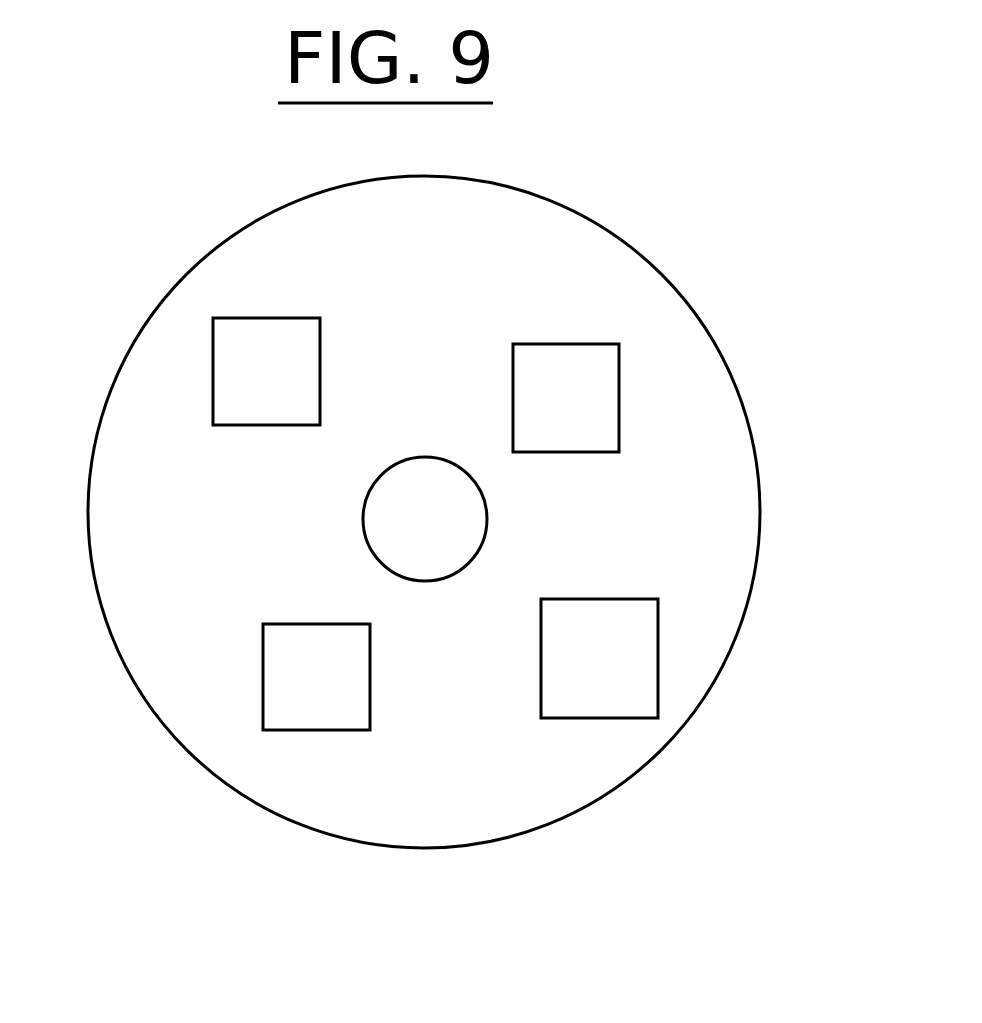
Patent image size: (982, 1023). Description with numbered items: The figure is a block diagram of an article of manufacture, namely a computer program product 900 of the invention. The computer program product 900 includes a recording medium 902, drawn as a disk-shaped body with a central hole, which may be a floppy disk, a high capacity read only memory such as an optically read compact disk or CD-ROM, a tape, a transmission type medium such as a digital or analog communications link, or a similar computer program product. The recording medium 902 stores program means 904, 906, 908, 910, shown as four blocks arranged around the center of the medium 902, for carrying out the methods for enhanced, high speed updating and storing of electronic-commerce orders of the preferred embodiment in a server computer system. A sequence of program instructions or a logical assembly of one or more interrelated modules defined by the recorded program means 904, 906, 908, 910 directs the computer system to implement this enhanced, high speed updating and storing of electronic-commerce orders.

The computer program product 900 is at (711, 294).
The recording medium 902 is at (147, 327).
The program means 904 is at (566, 398).
The program means 906 is at (599, 658).
The program means 908 is at (316, 677).
The program means 910 is at (266, 371).